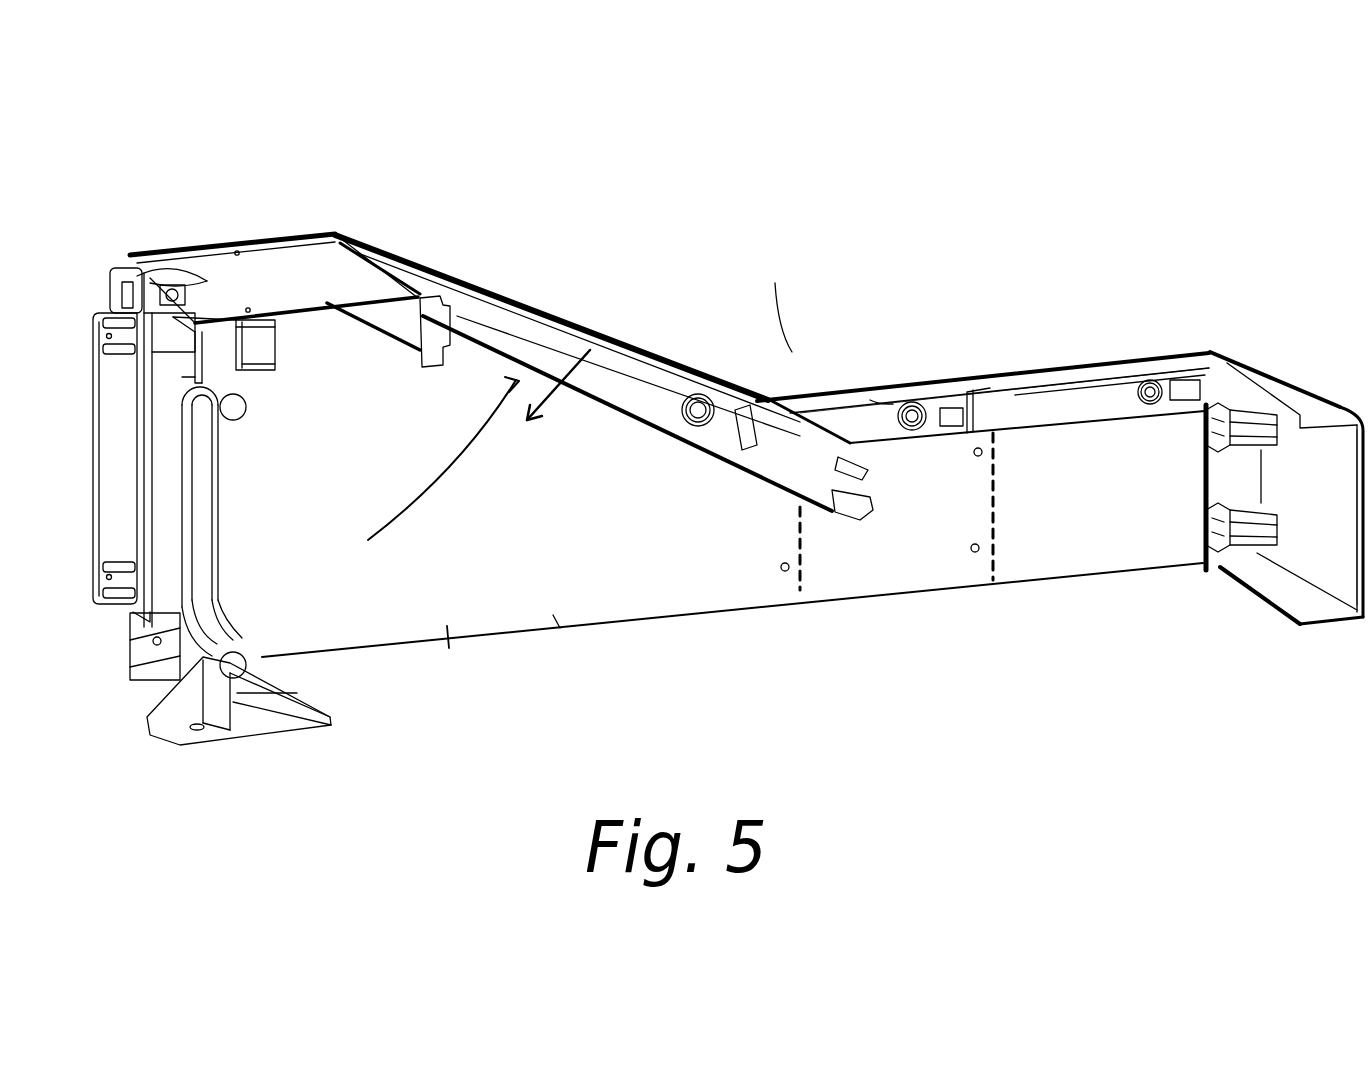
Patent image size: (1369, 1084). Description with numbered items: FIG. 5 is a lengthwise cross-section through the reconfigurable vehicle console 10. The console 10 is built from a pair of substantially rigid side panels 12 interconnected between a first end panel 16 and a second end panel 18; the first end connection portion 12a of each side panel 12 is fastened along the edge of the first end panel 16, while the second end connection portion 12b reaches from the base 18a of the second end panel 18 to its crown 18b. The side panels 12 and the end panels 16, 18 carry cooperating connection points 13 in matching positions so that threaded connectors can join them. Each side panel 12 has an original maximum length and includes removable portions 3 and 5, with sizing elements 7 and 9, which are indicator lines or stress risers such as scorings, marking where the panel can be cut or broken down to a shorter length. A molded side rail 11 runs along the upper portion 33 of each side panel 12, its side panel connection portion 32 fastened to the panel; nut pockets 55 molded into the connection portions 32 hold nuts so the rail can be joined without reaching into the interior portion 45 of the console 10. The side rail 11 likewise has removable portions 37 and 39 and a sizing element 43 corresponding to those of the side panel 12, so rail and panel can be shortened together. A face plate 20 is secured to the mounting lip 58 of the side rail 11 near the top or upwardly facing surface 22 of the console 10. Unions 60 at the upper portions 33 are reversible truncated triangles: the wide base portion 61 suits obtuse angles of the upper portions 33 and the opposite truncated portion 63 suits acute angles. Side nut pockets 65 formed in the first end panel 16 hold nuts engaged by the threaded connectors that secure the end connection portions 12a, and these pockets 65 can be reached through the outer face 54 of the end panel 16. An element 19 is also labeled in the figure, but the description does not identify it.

The reconfigurable vehicle console 10 is at (160, 210).
The removable portion 3 is at (1097, 549).
The removable portion 5 is at (890, 582).
The sizing element 7 is at (1015, 576).
The sizing element 9 is at (824, 589).
The side rail 11 is at (518, 300).
The side panel 12 is at (449, 654).
The first end connection portion 12a is at (333, 383).
The second end connection portion 12b is at (262, 650).
The cooperating connection point 13 is at (558, 620).
The first end panel 16 is at (1320, 398).
The second end panel 18 is at (122, 616).
The base 18a is at (133, 683).
The crown 18b is at (125, 272).
The guide strip 19 is at (108, 292).
The face plate 20 is at (273, 290).
The top or upwardly facing surface 22 is at (851, 248).
The side panel connection portion 32 is at (690, 440).
The upper connection portion 33 is at (425, 467).
The removable portion 37 is at (1110, 398).
The removable portion 39 is at (875, 420).
The sizing element 43 is at (995, 392).
The interior portion 45 is at (620, 337).
The outer face 54 is at (1304, 514).
The nut pocket 55 is at (722, 390).
The mounting lip 58 is at (573, 320).
The union 60 is at (373, 246).
The wide base portion 61 is at (437, 270).
The truncated portion 63 is at (417, 375).
The side nut pocket 65 is at (1245, 366).